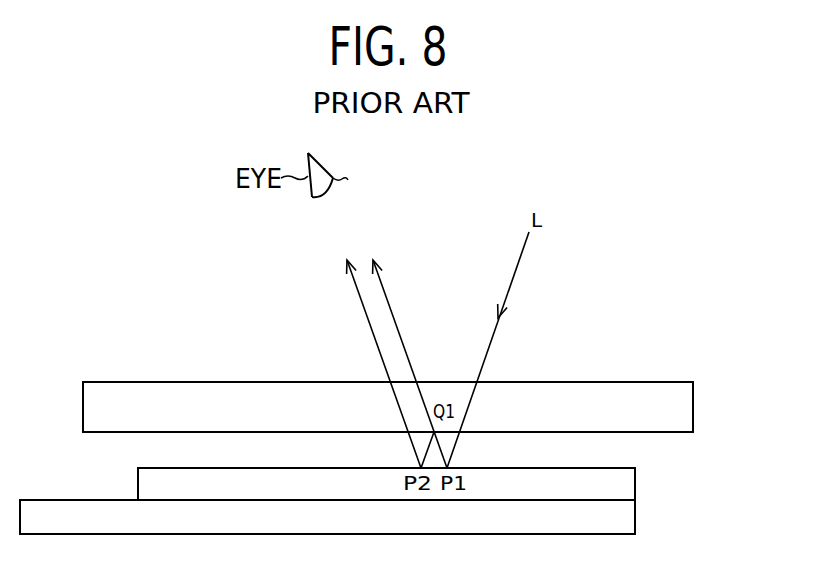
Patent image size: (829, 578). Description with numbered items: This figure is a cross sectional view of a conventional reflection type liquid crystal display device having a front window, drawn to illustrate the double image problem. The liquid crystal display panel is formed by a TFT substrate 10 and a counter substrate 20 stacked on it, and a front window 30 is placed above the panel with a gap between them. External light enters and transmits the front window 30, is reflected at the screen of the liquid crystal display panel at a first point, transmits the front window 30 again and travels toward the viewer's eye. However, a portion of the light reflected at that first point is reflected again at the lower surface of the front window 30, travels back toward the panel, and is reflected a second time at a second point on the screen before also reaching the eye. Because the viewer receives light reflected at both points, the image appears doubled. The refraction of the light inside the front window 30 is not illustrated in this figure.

The TFT substrate 10 is at (635, 515).
The counter substrate 20 is at (635, 482).
The front window 30 is at (693, 403).